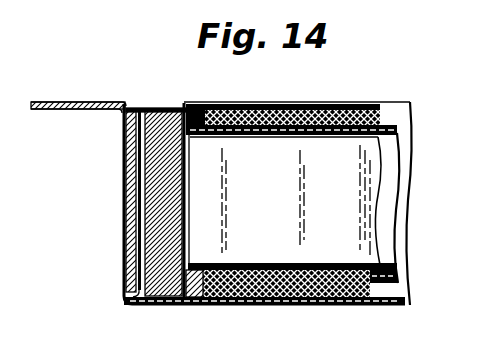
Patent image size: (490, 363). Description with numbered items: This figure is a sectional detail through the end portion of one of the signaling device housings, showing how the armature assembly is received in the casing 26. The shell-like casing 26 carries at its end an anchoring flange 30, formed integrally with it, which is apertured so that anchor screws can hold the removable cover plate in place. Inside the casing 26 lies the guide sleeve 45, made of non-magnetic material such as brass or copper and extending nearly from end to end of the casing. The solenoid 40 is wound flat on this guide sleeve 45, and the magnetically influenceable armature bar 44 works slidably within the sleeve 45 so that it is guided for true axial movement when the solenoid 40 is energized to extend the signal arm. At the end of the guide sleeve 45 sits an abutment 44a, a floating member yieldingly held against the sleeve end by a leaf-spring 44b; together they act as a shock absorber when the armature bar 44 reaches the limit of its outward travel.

The anchoring flange 30 is at (98, 108).
The casing 26 is at (124, 259).
The solenoid 40 is at (315, 110).
The armature bar 44 is at (372, 182).
The abutment 44a is at (182, 187).
The leaf-spring 44b is at (143, 190).
The guide sleeve 45 is at (402, 128).